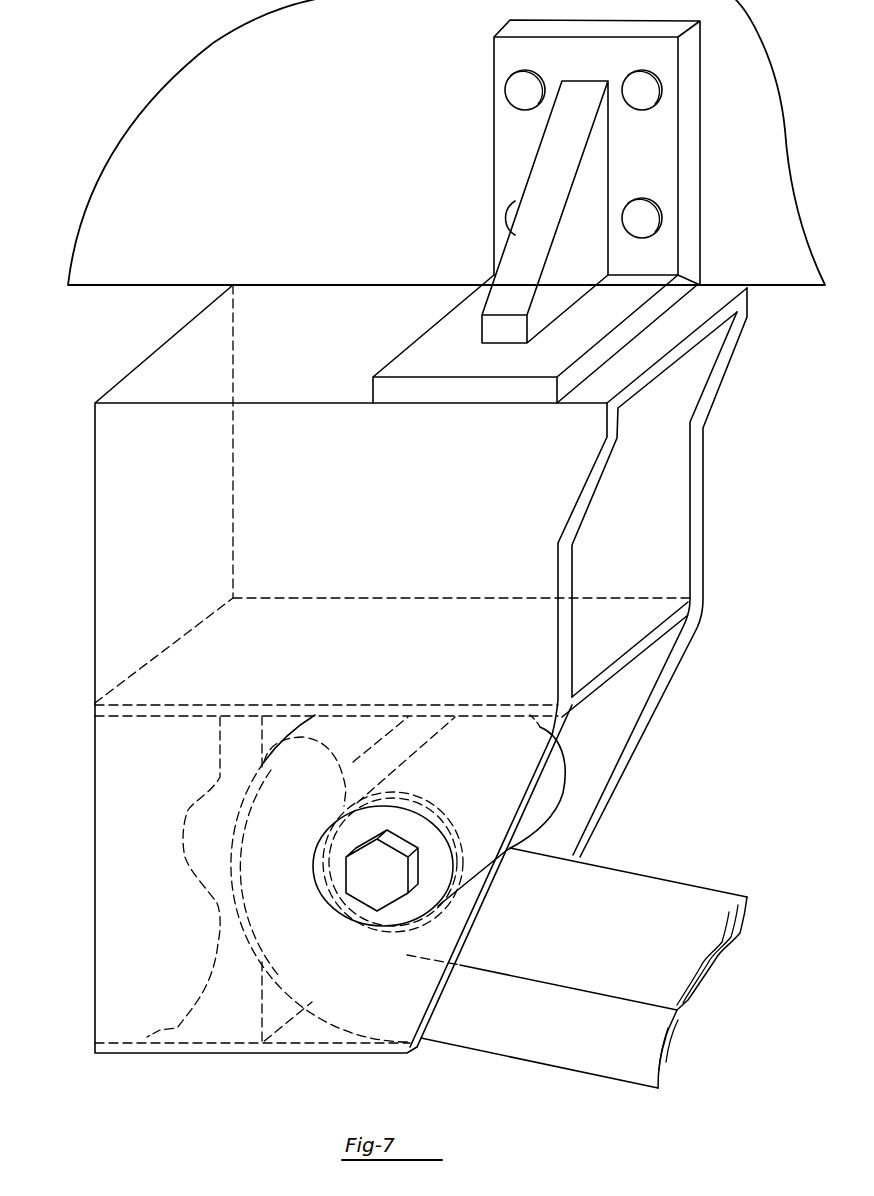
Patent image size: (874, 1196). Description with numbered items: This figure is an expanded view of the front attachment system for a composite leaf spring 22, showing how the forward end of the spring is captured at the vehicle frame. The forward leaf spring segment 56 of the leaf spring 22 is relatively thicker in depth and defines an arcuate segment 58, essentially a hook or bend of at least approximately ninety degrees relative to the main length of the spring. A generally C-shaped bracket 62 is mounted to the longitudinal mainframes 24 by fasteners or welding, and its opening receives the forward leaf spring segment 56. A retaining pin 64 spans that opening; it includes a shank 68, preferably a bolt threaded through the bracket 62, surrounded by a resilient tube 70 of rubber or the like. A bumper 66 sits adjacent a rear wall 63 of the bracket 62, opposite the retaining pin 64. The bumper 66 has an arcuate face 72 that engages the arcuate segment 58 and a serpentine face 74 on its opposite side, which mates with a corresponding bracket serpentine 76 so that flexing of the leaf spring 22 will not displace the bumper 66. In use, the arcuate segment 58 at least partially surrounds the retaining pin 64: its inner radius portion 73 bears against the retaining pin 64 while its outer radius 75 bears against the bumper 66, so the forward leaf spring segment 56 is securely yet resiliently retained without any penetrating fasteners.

The leaf spring 22 is at (693, 910).
The longitudinal mainframes 24 is at (378, 152).
The forward leaf spring segment 56 is at (480, 1016).
The arcuate segment 58 is at (300, 924).
The bracket 62 is at (573, 728).
The rear wall 63 is at (93, 955).
The retaining pin 64 is at (478, 842).
The bumper 66 is at (228, 1013).
The shank 68 is at (385, 882).
The resilient tube 70 is at (547, 775).
The arcuate face 72 is at (248, 920).
The inner radius portion 73 is at (338, 910).
The serpentine face 74 is at (147, 1037).
The outer radius 75 is at (224, 843).
The bracket serpentine 76 is at (218, 920).